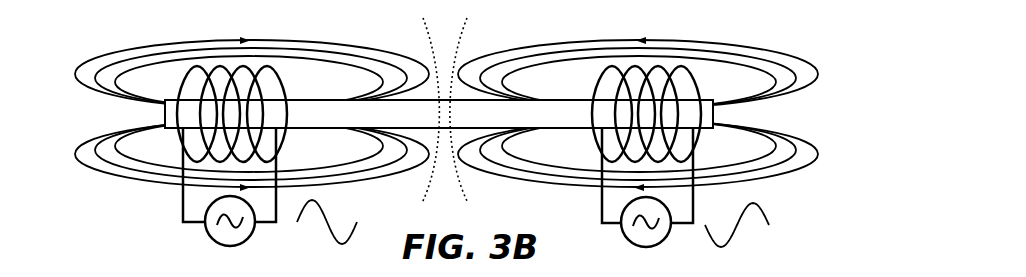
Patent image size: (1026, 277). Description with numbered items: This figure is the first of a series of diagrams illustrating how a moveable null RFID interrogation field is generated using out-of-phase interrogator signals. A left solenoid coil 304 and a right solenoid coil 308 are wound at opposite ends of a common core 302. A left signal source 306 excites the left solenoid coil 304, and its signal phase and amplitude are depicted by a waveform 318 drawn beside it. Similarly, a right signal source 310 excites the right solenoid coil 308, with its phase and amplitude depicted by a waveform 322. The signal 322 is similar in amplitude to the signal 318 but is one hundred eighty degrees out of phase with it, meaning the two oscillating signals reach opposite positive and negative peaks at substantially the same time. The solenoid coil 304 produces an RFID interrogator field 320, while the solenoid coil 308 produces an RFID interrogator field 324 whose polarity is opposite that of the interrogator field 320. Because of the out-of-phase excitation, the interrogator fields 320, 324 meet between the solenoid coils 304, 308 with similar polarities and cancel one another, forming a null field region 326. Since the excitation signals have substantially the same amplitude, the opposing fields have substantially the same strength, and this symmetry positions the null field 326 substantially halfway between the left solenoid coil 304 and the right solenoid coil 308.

The core 302 is at (439, 126).
The left solenoid coil 304 is at (262, 114).
The left signal source 306 is at (248, 201).
The right solenoid coil 308 is at (616, 114).
The right signal source 310 is at (666, 201).
The waveform 318 is at (343, 216).
The RFID interrogator field 320 is at (227, 114).
The waveform 322 is at (767, 214).
The RFID interrogator field 324 is at (665, 114).
The null field region 326 is at (461, 101).